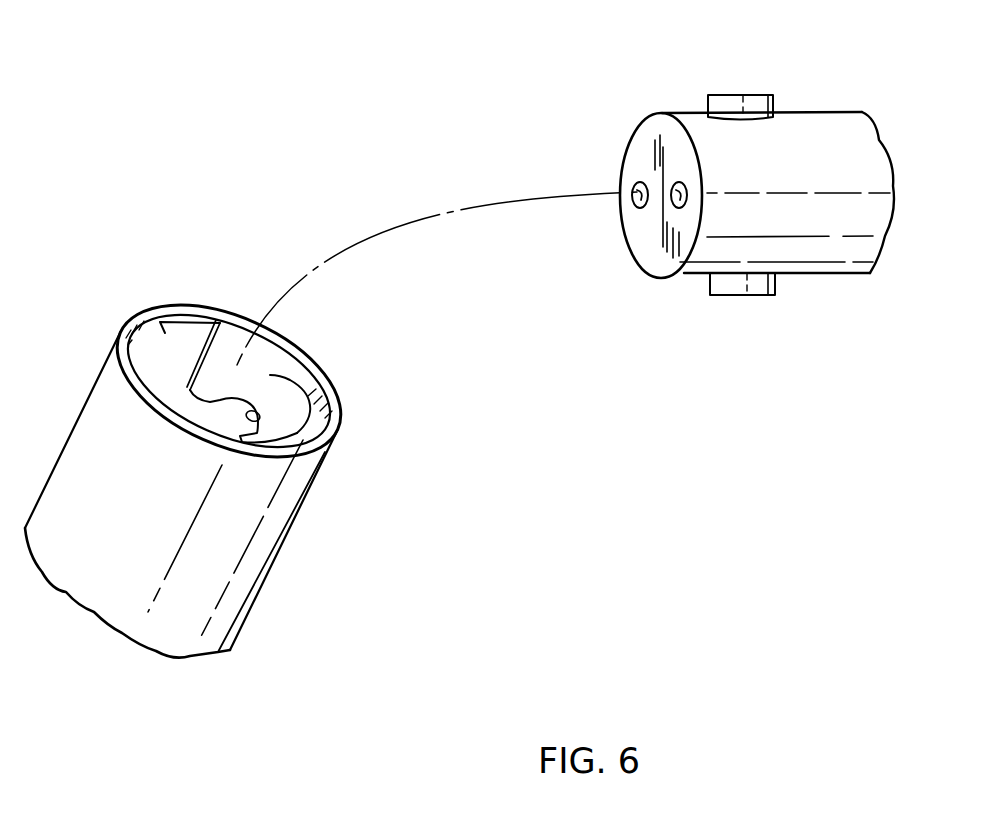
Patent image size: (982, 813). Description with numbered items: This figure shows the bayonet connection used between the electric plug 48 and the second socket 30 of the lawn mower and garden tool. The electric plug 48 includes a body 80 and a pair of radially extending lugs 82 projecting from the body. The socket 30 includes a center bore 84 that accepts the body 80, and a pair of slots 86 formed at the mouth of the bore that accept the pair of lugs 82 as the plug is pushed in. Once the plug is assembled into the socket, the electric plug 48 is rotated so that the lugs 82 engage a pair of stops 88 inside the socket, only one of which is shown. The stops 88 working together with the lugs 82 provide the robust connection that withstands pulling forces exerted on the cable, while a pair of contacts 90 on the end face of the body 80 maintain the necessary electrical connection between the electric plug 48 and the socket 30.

The second socket 30 is at (223, 610).
The electric plug 48 is at (832, 248).
The body 80 is at (827, 127).
The radially extending lugs 82 is at (730, 94).
The center bore 84 is at (263, 374).
The slots 86 is at (180, 340).
The stops 88 is at (318, 382).
The contacts 90 is at (677, 208).